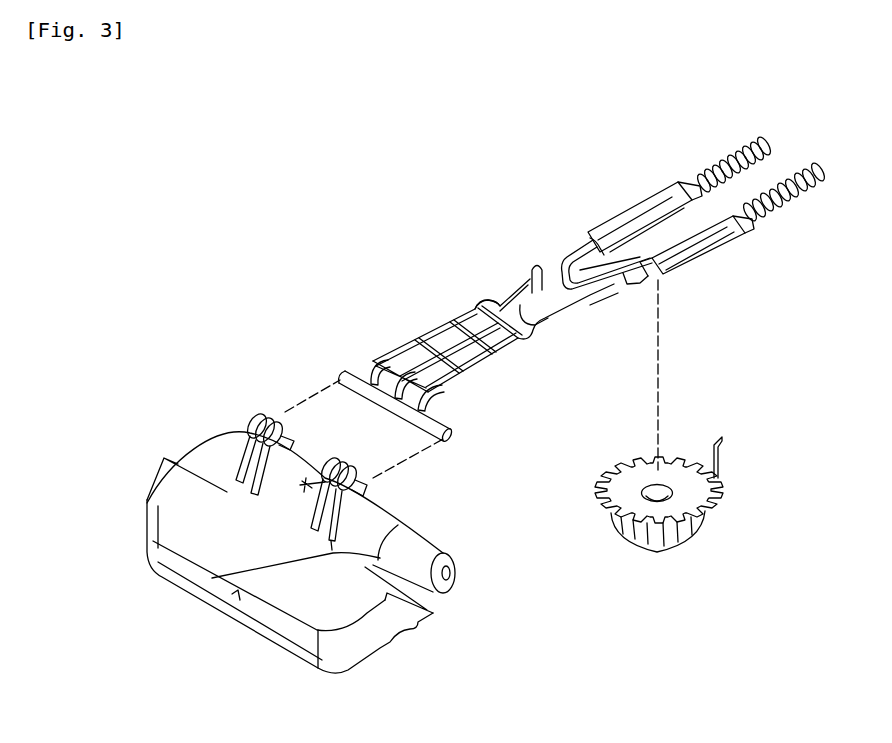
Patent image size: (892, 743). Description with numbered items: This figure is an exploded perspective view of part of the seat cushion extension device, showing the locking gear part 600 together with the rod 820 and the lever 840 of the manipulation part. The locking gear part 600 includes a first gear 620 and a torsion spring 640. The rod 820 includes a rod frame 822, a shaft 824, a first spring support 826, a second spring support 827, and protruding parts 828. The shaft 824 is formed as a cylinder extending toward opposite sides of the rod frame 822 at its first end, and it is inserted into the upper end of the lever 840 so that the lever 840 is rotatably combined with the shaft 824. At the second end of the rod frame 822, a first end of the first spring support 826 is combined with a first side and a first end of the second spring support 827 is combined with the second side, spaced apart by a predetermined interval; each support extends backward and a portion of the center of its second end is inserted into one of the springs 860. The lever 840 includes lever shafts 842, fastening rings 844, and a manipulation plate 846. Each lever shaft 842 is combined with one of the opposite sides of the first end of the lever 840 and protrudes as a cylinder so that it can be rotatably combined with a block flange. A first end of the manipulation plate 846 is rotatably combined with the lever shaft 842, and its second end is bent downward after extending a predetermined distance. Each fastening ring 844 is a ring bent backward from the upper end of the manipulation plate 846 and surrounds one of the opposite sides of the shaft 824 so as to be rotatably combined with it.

The rod 820 is at (248, 192).
The rod frame 822 is at (533, 268).
The first spring support 826 is at (625, 216).
The second spring support 827 is at (602, 243).
The protruding parts 828 is at (480, 309).
The shaft 824 is at (345, 372).
The springs 860 is at (730, 158).
The locking gear part 600 is at (812, 468).
The first gear 620 is at (668, 478).
The torsion spring 640 is at (683, 545).
The lever 840 is at (66, 500).
The lever shafts 842 is at (200, 586).
The fastening rings 844 is at (158, 490).
The manipulation plate 846 is at (203, 534).